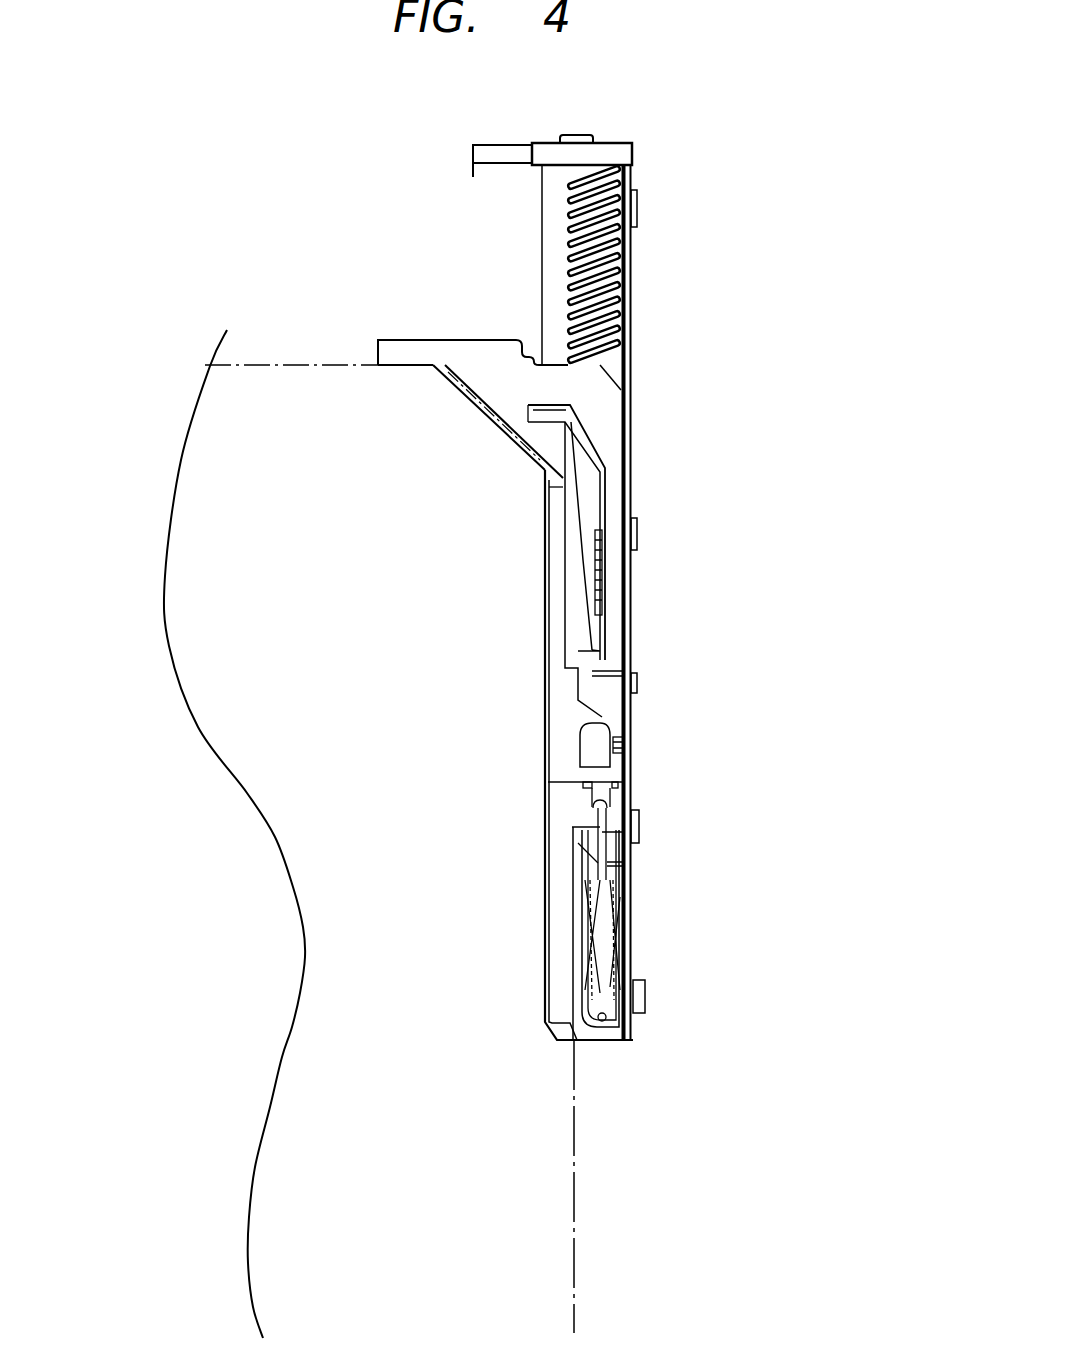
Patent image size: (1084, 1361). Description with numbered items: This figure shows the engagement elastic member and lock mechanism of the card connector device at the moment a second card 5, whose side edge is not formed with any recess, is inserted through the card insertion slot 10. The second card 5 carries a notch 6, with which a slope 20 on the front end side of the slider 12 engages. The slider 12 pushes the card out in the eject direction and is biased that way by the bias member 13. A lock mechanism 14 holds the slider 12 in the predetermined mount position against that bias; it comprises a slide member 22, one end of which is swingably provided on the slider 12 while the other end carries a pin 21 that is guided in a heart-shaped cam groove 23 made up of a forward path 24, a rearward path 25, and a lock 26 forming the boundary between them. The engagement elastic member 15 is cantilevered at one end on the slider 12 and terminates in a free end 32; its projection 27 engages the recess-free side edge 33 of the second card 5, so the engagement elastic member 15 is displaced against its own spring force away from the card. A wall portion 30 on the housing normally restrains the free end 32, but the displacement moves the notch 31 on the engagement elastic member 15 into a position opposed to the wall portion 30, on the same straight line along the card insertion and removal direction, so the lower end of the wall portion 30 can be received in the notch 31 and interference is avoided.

The second card 5 is at (575, 1200).
The notch 6 is at (468, 378).
The card insertion slot 10 is at (560, 1030).
The slider 12 is at (608, 388).
The bias member 13 is at (616, 256).
The lock mechanism 14 is at (642, 912).
The engagement elastic member 15 is at (575, 503).
The slope 20 is at (478, 398).
The pin 21 is at (605, 1042).
The slide member 22 is at (602, 883).
The heart-shaped cam groove 23 is at (622, 935).
The forward path 24 is at (583, 893).
The rearward path 25 is at (630, 850).
The lock 26 is at (623, 833).
The projection 27 is at (637, 681).
The wall portion 30 is at (603, 583).
The notch 31 is at (577, 728).
The free end 32 is at (627, 740).
The side edge 33 is at (572, 632).